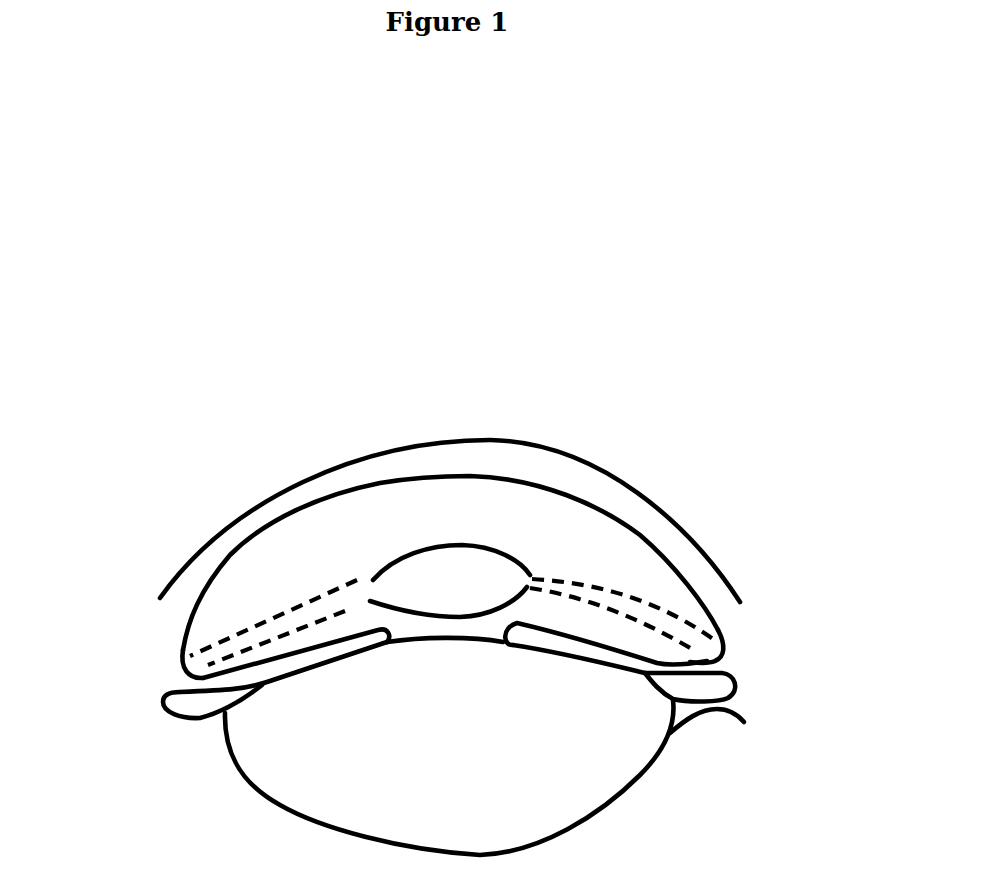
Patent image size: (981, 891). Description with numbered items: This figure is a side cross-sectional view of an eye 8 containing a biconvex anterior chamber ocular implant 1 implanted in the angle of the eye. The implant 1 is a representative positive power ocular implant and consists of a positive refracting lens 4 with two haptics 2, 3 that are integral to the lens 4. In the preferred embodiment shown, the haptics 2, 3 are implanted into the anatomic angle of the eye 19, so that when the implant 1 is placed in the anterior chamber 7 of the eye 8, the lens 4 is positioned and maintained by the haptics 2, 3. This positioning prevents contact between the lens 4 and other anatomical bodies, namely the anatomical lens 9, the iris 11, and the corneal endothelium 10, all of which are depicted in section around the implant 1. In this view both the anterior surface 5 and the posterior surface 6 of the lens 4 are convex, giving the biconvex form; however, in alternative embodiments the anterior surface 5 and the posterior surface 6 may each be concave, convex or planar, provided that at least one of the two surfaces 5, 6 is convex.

The anterior chamber ocular implant 1 is at (453, 545).
The haptic 2 is at (612, 601).
The haptic 3 is at (307, 620).
The positive refracting lens 4 is at (483, 573).
The anterior surface 5 is at (430, 545).
The posterior surface 6 is at (455, 620).
The anterior chamber 7 is at (263, 572).
The eye 8 is at (750, 508).
The anatomical lens 9 is at (297, 783).
The corneal endothelium 10 is at (355, 483).
The iris 11 is at (345, 661).
The anatomic angle of the eye 19 is at (137, 655).